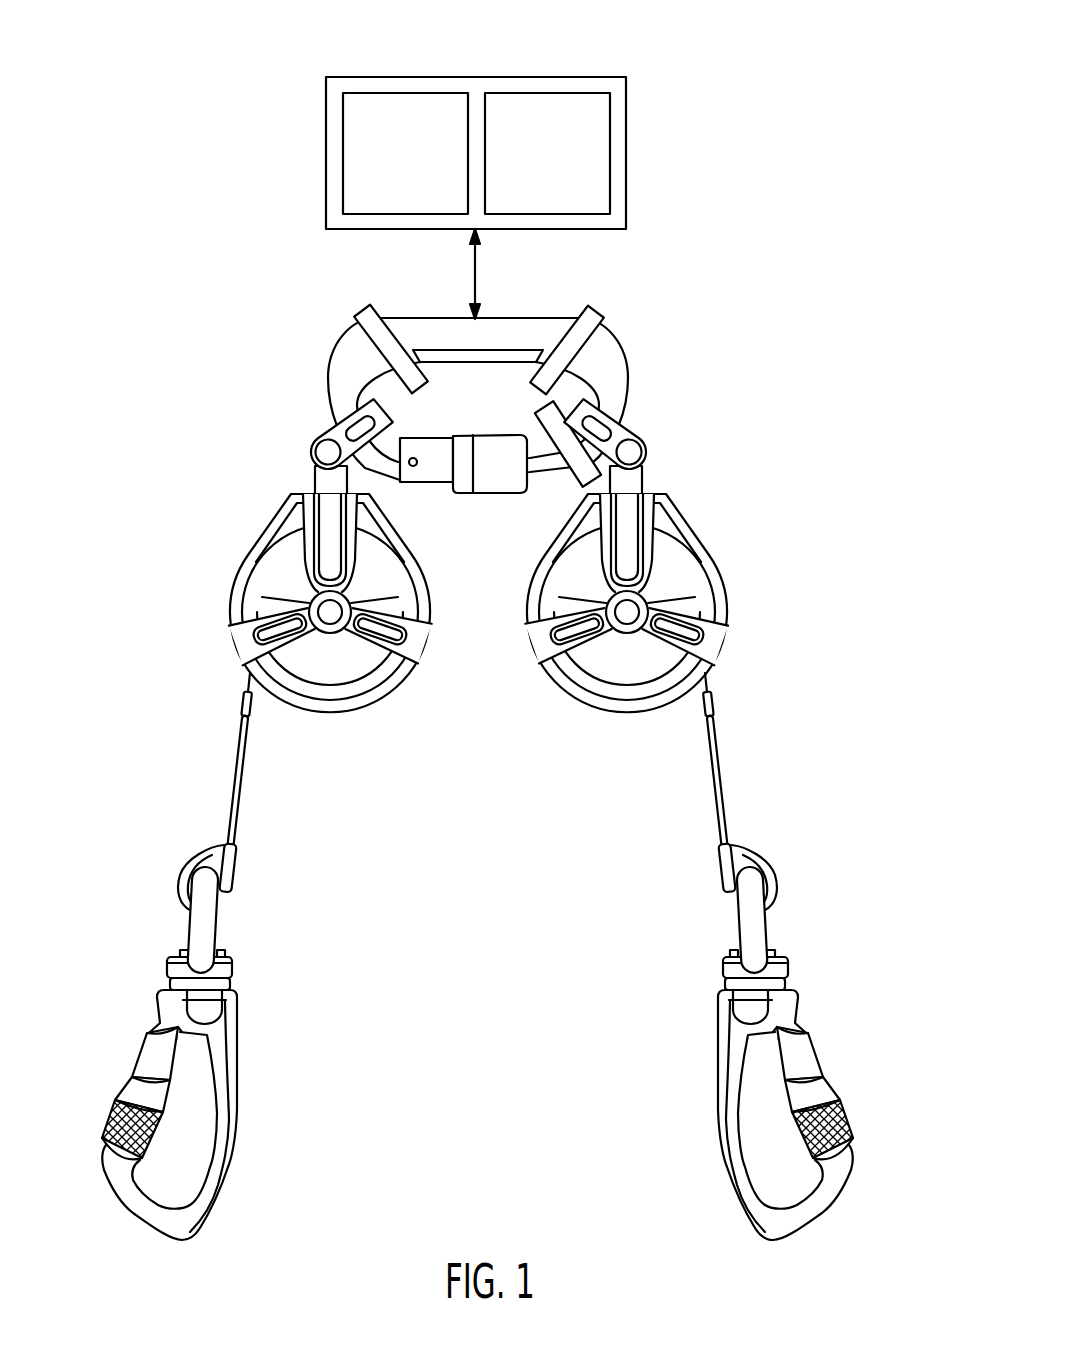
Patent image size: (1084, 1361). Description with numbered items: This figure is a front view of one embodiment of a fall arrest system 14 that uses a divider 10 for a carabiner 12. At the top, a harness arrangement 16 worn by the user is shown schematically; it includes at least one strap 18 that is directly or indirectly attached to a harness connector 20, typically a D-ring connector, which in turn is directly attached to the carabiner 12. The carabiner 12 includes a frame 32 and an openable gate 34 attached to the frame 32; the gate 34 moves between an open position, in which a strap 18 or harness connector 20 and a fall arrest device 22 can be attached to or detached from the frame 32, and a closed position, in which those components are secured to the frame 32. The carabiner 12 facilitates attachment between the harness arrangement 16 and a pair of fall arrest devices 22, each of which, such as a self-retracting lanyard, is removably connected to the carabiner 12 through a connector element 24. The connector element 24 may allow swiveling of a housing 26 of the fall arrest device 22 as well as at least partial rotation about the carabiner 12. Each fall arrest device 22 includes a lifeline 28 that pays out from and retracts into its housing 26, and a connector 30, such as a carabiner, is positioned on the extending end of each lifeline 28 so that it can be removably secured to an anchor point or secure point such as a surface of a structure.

The divider 10 is at (626, 308).
The carabiner 12 is at (645, 359).
The fall arrest system 14 is at (176, 467).
The harness arrangement 16 is at (626, 90).
The strap 18 is at (626, 183).
The harness connector 20 is at (342, 153).
The fall arrest device 22 is at (204, 561).
The connector element 24 is at (325, 428).
The housing 26 is at (233, 626).
The lifeline 28 is at (237, 780).
The connector 30 is at (110, 1041).
The frame 32 is at (345, 366).
The gate 34 is at (492, 470).